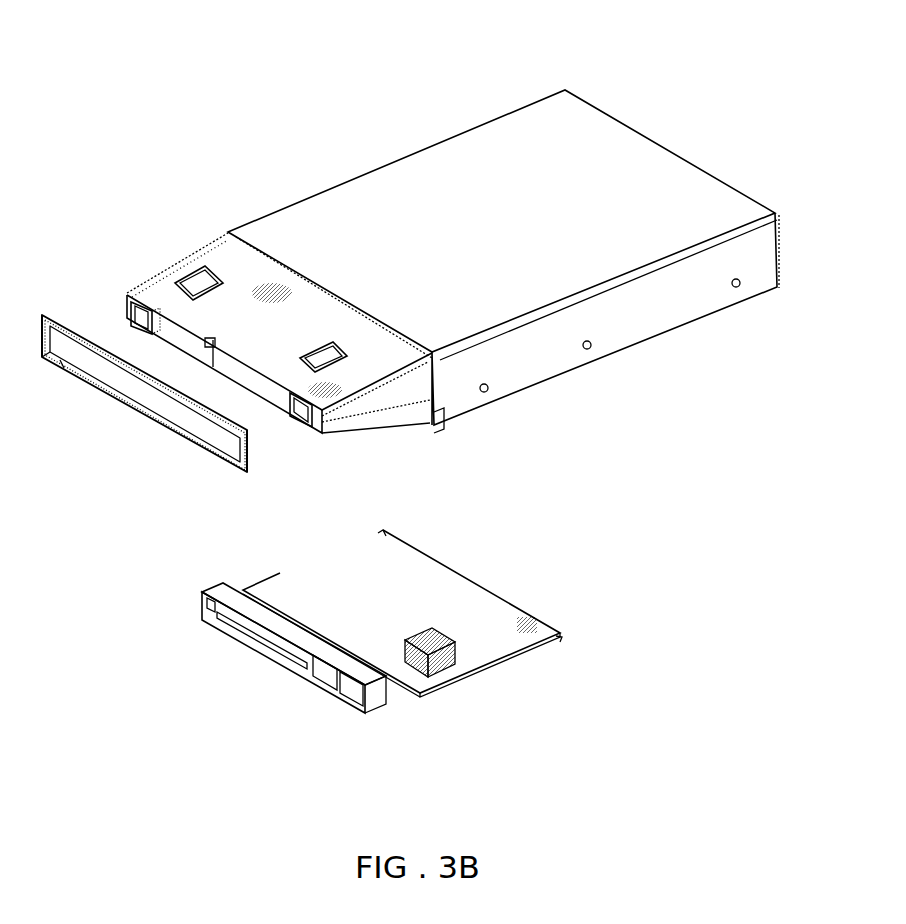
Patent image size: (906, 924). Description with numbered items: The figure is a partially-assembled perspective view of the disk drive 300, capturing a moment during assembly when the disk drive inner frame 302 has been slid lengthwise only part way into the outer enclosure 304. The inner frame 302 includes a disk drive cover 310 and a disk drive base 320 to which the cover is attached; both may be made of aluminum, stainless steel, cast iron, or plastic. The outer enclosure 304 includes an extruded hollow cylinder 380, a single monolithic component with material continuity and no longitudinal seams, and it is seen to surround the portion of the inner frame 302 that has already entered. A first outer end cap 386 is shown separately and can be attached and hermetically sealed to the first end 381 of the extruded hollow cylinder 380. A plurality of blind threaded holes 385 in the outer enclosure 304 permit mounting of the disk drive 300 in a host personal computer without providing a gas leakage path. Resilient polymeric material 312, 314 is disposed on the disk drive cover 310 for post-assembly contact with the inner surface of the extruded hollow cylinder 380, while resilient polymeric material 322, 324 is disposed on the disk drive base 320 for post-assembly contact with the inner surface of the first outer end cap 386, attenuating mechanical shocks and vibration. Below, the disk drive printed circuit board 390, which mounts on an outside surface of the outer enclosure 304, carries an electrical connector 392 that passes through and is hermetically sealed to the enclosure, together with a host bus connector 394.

The disk drive 300 is at (243, 60).
The disk drive inner frame 302 is at (190, 222).
The outer enclosure 304 is at (484, 100).
The disk drive cover 310 is at (329, 311).
The resilient polymeric material 312 is at (190, 288).
The resilient polymeric material 314 is at (320, 360).
The disk drive base 320 is at (388, 392).
The resilient polymeric material 322 is at (135, 318).
The resilient polymeric material 324 is at (303, 424).
The extruded hollow cylinder 380 is at (370, 188).
The first end 381 is at (440, 427).
The blind threaded holes 385 is at (490, 389).
The first outer end cap 386 is at (155, 408).
The disk drive printed circuit board 390 is at (428, 592).
The electrical connector 392 is at (428, 668).
The host bus connector 394 is at (217, 619).